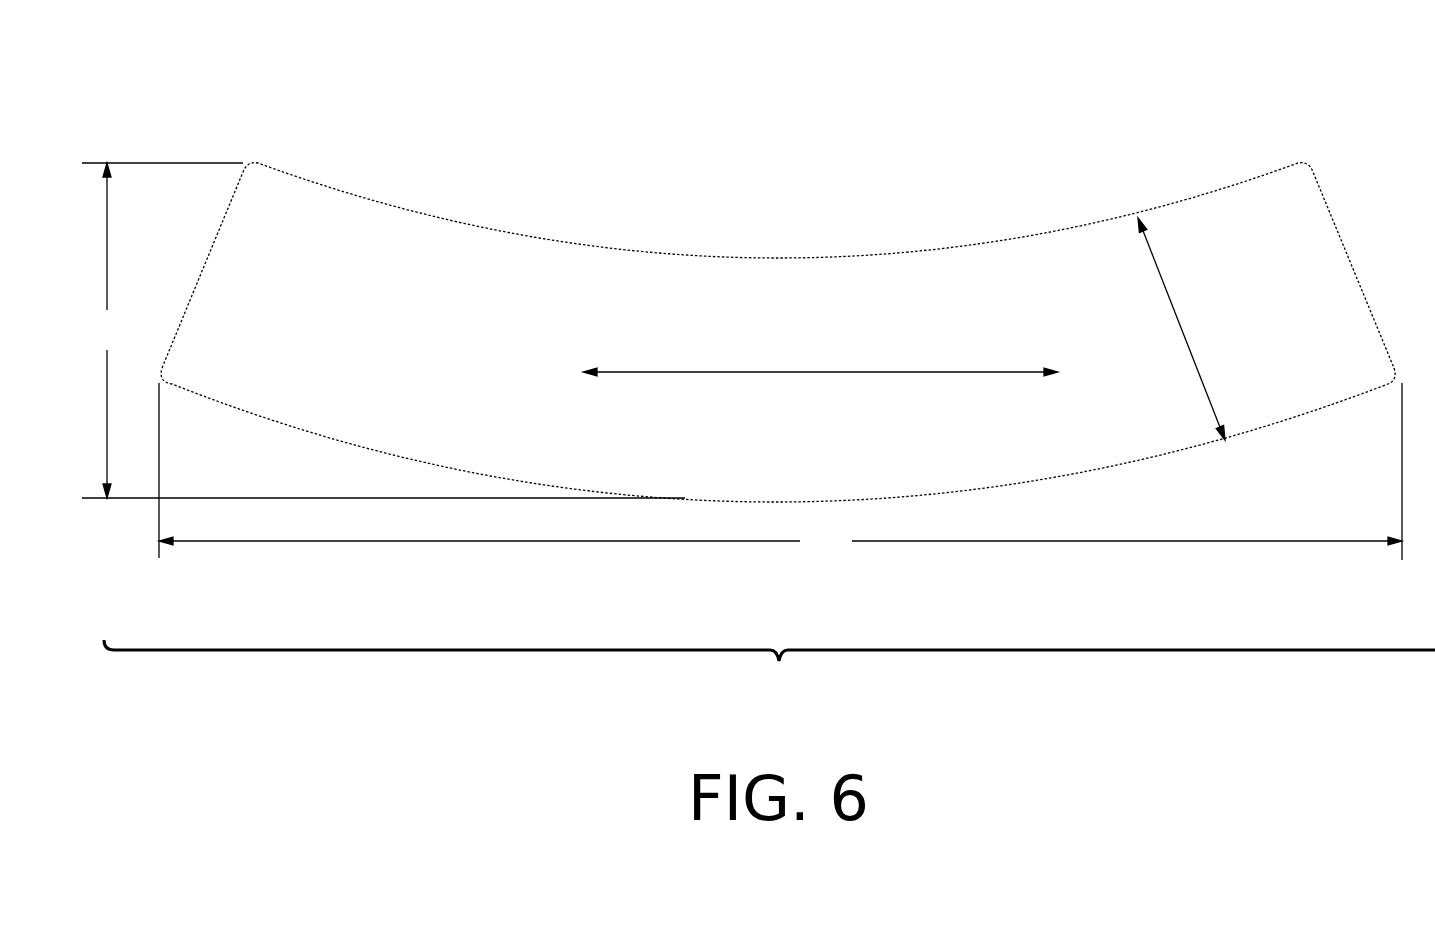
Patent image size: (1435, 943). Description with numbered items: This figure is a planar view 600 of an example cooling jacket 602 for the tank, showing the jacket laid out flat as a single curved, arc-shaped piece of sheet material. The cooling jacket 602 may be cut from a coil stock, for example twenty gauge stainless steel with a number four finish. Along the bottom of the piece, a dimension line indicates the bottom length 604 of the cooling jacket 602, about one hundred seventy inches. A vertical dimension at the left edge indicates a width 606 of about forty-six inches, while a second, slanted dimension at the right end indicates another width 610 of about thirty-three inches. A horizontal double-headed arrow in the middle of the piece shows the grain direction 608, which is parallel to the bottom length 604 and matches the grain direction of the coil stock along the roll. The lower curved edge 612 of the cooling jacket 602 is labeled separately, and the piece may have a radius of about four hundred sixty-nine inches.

The planar view 600 is at (769, 357).
The cooling jacket 602 is at (188, 56).
The bottom length 604 is at (780, 471).
The width 606 is at (383, 330).
The grain direction 608 is at (872, 370).
The width 610 is at (1181, 330).
The lower curved surface 612 is at (1173, 452).